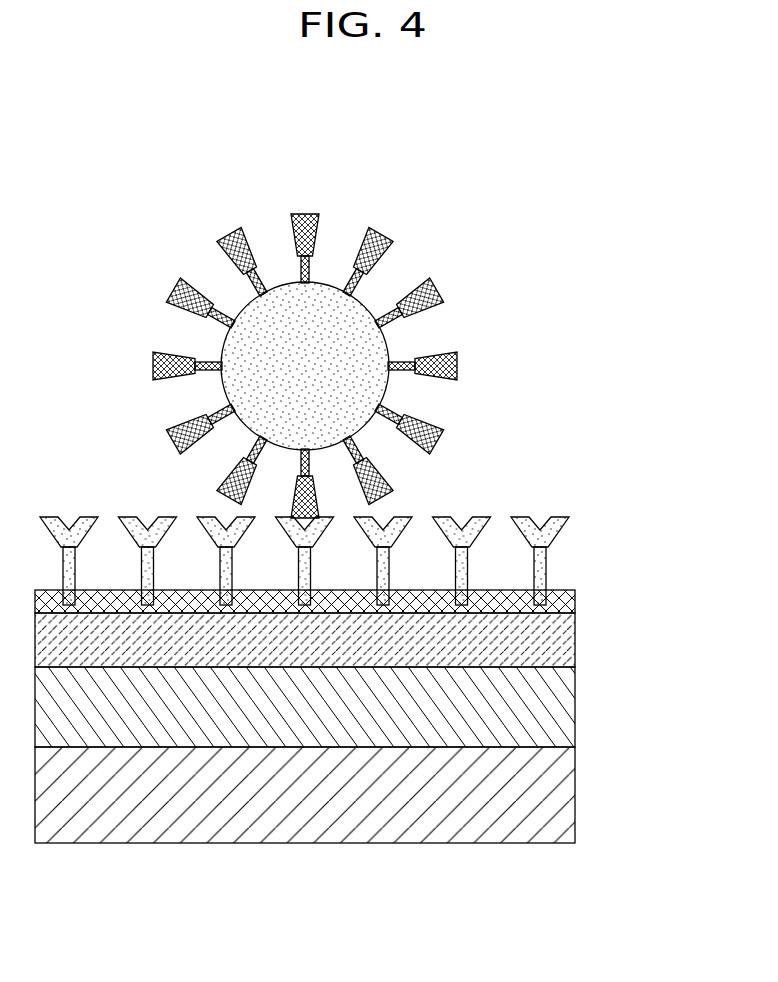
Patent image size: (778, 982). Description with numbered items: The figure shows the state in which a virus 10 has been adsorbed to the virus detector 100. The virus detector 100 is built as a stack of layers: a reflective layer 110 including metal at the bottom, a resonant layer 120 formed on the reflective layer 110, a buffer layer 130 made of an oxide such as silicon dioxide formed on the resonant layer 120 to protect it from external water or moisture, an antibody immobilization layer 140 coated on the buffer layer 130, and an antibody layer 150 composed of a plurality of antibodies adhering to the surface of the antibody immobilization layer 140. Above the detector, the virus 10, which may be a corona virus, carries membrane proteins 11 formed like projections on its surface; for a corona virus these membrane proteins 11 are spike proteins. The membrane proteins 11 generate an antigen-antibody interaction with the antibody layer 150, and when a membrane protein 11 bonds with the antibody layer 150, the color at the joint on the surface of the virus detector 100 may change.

The virus 10 is at (339, 338).
The membrane protein 11 is at (458, 366).
The virus detector 100 is at (361, 642).
The reflective layer 110 is at (565, 795).
The resonant layer 120 is at (565, 708).
The buffer layer 130 is at (566, 643).
The antibody immobilization layer 140 is at (568, 601).
The antibody layer 150 is at (546, 568).